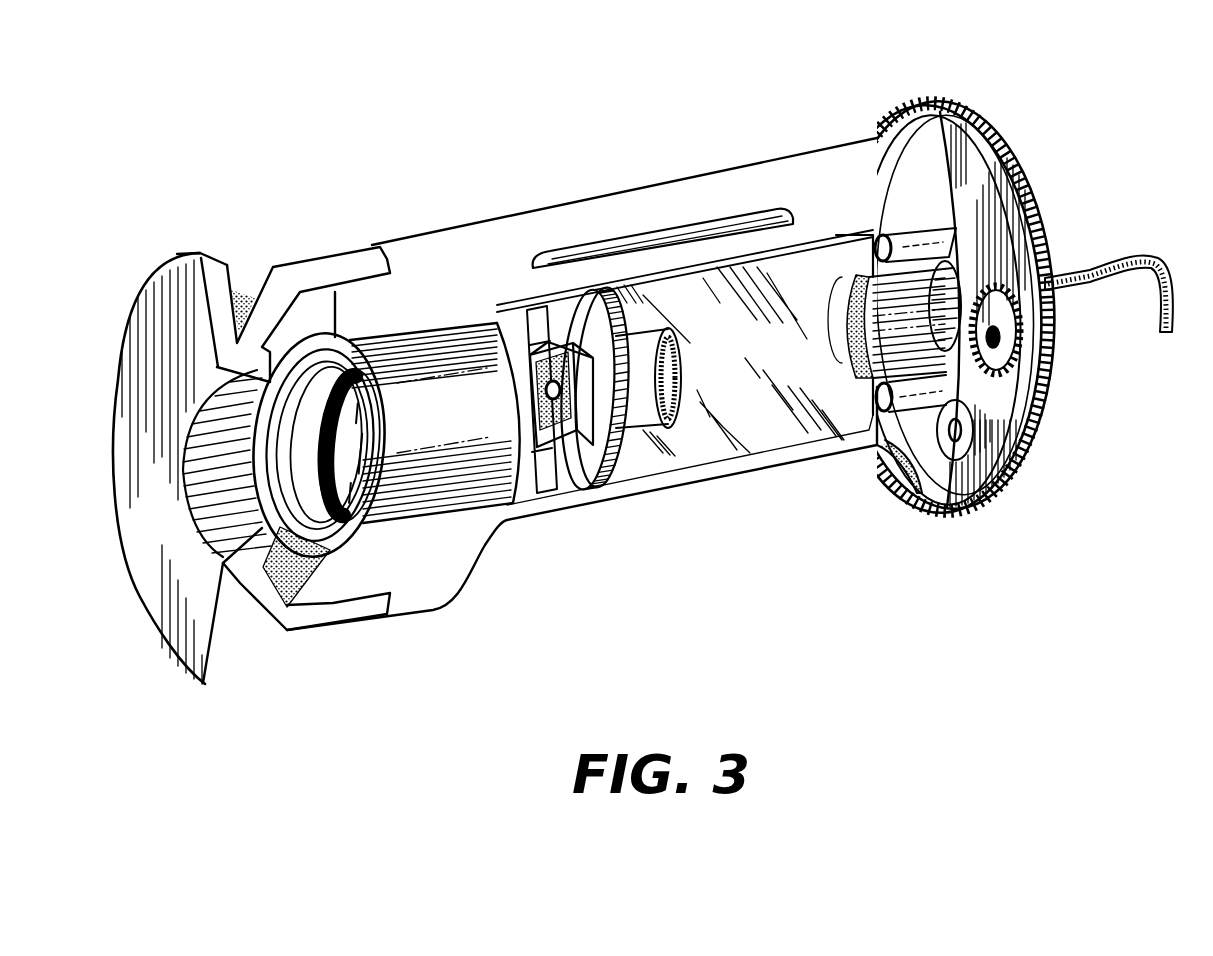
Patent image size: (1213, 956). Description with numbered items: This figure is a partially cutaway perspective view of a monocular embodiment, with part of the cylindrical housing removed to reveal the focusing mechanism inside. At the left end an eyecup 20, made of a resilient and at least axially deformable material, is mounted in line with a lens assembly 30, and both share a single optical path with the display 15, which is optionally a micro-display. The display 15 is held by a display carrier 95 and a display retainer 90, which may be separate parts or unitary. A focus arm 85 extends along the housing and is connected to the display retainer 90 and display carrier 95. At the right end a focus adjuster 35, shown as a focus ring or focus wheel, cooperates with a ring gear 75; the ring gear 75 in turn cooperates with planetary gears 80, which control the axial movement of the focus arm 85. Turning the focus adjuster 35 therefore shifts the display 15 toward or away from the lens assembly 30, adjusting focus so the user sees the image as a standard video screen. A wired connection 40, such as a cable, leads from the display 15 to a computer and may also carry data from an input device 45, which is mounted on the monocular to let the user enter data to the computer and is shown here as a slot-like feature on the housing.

The display 15 is at (550, 440).
The eyecup 20 is at (322, 552).
The lens assembly 30 is at (420, 502).
The focus adjuster 35 is at (1000, 137).
The wired connection 40 is at (1163, 333).
The input device 45 is at (625, 255).
The ring gear 75 is at (1040, 473).
The planetary gears 80 is at (940, 472).
The focus arm 85 is at (717, 423).
The display retainer 90 is at (577, 290).
The display carrier 95 is at (533, 330).